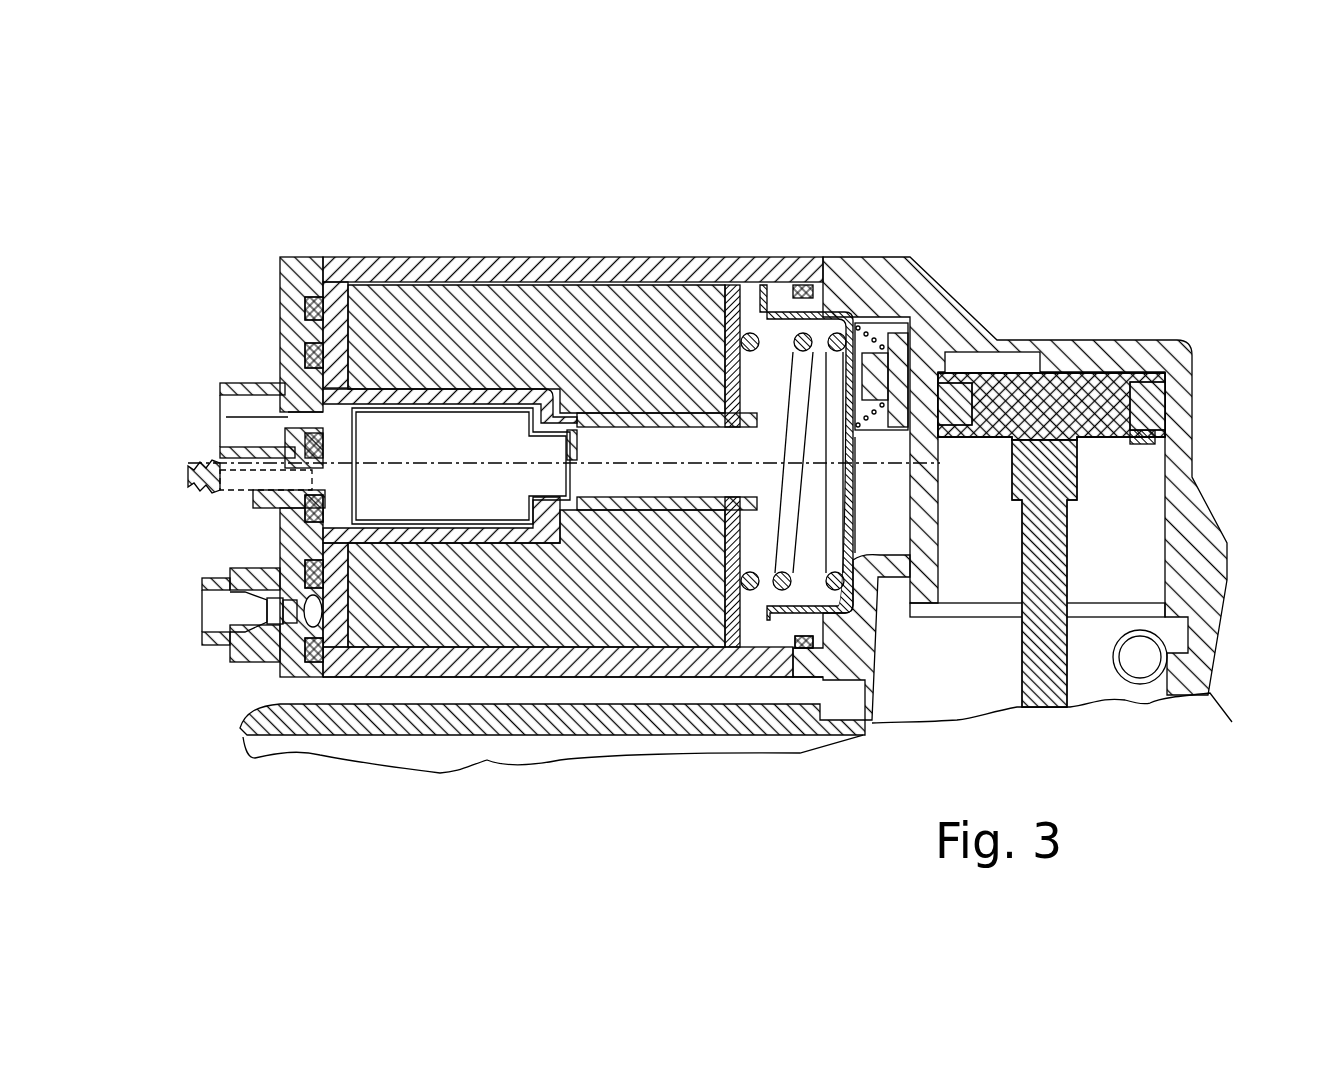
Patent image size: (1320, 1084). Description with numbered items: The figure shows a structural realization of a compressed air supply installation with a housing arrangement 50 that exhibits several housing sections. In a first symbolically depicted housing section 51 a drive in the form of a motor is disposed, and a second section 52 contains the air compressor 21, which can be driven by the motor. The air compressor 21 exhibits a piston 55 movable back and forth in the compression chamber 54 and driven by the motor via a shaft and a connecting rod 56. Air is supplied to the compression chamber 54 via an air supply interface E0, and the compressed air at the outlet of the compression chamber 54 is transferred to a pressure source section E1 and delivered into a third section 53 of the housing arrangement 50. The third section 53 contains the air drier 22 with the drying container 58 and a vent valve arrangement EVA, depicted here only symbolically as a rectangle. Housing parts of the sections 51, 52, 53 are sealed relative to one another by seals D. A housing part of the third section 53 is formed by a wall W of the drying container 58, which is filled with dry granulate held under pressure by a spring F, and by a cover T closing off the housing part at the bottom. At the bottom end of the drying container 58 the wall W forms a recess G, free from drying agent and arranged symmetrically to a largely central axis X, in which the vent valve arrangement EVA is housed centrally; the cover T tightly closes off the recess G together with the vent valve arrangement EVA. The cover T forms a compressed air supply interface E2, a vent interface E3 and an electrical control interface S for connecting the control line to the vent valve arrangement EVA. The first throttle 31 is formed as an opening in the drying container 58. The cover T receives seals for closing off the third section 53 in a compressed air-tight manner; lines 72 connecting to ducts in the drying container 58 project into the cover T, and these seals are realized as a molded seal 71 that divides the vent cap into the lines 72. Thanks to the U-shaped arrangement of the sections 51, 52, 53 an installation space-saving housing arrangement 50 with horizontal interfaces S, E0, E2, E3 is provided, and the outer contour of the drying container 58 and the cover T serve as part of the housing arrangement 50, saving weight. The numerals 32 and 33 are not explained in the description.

The air compressor 21 is at (1142, 547).
The air drier 22 is at (543, 278).
The first throttle 31 is at (238, 662).
The piston rod 32 is at (595, 500).
The cylinder block 33 is at (345, 535).
The housing arrangement 50 is at (638, 690).
The first housing section 51 is at (600, 722).
The second housing section 52 is at (965, 692).
The third housing section 53 is at (518, 355).
The compression chamber 54 is at (1167, 380).
The piston 55 is at (1187, 440).
The connecting rod 56 is at (1060, 660).
The drying container 58 is at (725, 340).
The molded seal 71 is at (305, 302).
The lines 72 is at (305, 352).
The cover T is at (280, 262).
The electrical control interface S is at (222, 417).
The vent interface E3 is at (245, 478).
The compressed air supply interface E2 is at (157, 612).
The pressure source section E1 is at (891, 305).
The air supply interface E0 is at (1208, 695).
The vent valve arrangement EVA is at (372, 388).
The wall W is at (637, 265).
The seal D is at (800, 286).
The spring F is at (830, 305).
The recess G is at (400, 434).
The central axis X is at (690, 463).